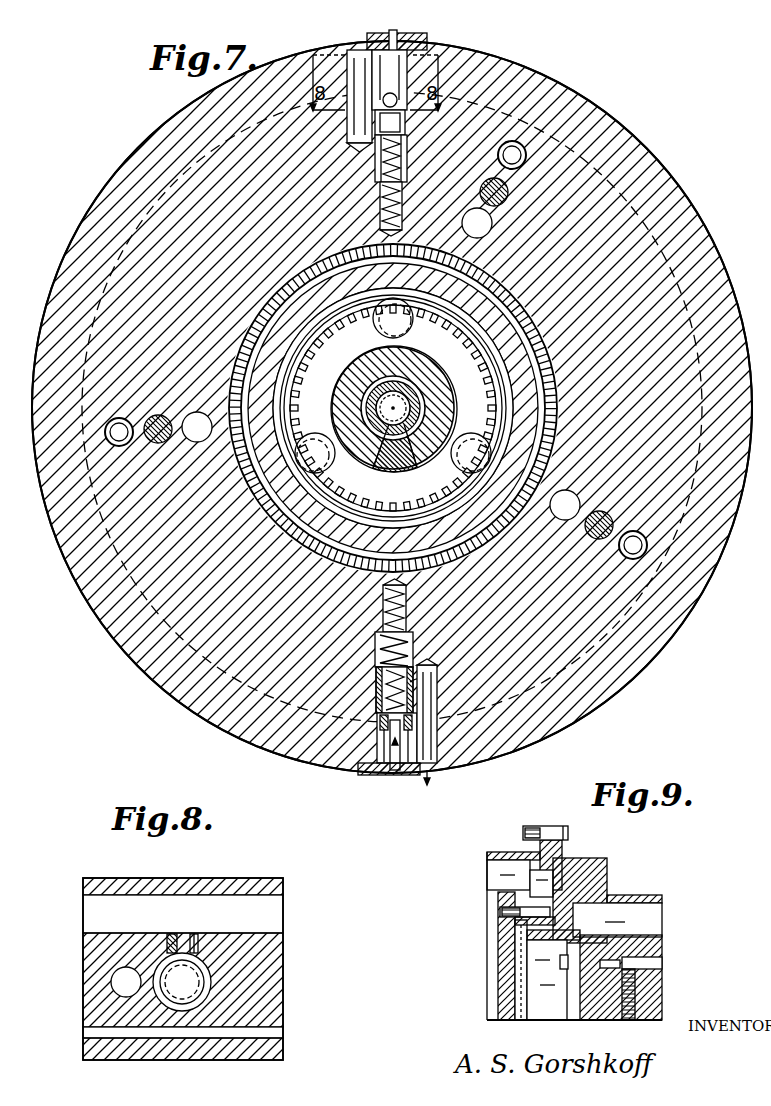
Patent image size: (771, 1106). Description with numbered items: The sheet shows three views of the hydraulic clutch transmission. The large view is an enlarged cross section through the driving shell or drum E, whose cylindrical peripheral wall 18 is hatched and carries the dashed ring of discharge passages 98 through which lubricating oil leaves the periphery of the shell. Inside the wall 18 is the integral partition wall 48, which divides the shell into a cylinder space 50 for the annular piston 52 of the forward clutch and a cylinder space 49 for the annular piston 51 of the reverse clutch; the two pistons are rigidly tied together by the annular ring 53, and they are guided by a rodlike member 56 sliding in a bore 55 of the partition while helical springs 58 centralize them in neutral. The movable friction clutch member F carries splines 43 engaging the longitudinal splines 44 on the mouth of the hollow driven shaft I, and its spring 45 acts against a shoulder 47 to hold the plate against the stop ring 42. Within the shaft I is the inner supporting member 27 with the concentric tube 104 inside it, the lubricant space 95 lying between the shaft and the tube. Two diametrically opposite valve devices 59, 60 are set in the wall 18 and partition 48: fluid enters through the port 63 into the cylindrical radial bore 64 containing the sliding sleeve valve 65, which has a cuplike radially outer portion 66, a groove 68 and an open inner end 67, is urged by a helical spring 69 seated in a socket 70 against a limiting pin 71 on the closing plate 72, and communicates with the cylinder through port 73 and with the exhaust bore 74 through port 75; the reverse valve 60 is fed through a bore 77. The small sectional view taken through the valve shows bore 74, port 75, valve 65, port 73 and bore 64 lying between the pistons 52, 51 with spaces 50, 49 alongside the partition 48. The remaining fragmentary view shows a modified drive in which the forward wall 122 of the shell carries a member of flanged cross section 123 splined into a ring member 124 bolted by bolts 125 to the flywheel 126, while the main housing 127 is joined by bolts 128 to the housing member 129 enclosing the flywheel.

In FIG. 7, the cylindrical peripheral wall 18 is at (505, 74).
In FIG. 7, the driving shell or drum E is at (144, 148).
In FIG. 7, the passages 98 is at (548, 98).
In FIG. 7, the partition wall 48 is at (594, 178).
In FIG. 8, the partition wall 48 is at (268, 983).
In FIG. 7, the helical springs 58 is at (500, 150).
In FIG. 7, the rodlike member 56 is at (489, 180).
In FIG. 7, the bore 55 is at (498, 205).
In FIG. 7, the movable friction clutch member F is at (288, 414).
In FIG. 7, the annular ring 53 is at (364, 268).
In FIG. 7, the stop ring 42 is at (348, 330).
In FIG. 7, the spring 45 is at (372, 322).
In FIG. 7, the splines 43 is at (452, 335).
In FIG. 7, the longitudinal splines 44 is at (412, 314).
In FIG. 7, the shoulders 47 is at (320, 440).
In FIG. 7, the driven shaft I is at (428, 378).
In FIG. 7, the inner supporting member 27 is at (404, 436).
In FIG. 7, the concentric tube 104 is at (388, 436).
In FIG. 7, the space 95 is at (420, 407).
In FIG. 7, the plate 72 is at (412, 34).
In FIG. 7, the limiting pin 71 is at (393, 33).
In FIG. 7, the exhaust bore 74 is at (350, 64).
In FIG. 8, the exhaust bore 74 is at (126, 966).
In FIG. 7, the cylindrical radial bore 64 is at (403, 70).
In FIG. 8, the cylindrical radial bore 64 is at (205, 962).
In FIG. 7, the port 63 is at (418, 64).
In FIG. 7, the valve device 59 is at (376, 55).
In FIG. 7, the port 73 is at (406, 117).
In FIG. 8, the port 73 is at (196, 953).
In FIG. 7, the cuplike radially outer portion 66 is at (407, 148).
In FIG. 7, the groove 68 is at (407, 168).
In FIG. 7, the sliding sleeve valve 65 is at (380, 158).
In FIG. 8, the sliding sleeve valve 65 is at (176, 953).
In FIG. 7, the port 75 is at (354, 140).
In FIG. 8, the port 75 is at (146, 968).
In FIG. 7, the helical spring 69 is at (402, 205).
In FIG. 7, the socket 70 is at (405, 186).
In FIG. 7, the inner end 67 is at (380, 190).
In FIG. 7, the valve device 60 is at (394, 776).
In FIG. 7, the bore 77 is at (360, 771).
In FIG. 8, the annular piston 52 is at (207, 880).
In FIG. 8, the cylinder space 50 is at (266, 913).
In FIG. 8, the cylinder space 49 is at (276, 1033).
In FIG. 8, the annular piston 51 is at (220, 1046).
In FIG. 9, the housing member 129 is at (514, 852).
In FIG. 9, the bolts 128 is at (548, 826).
In FIG. 9, the ring member 124 is at (555, 893).
In FIG. 9, the main housing 127 is at (645, 897).
In FIG. 9, the forward wall or head 122 is at (640, 962).
In FIG. 9, the flywheel 126 is at (502, 983).
In FIG. 9, the member of flanged cross section 123 is at (527, 942).
In FIG. 9, the bolts 125 is at (500, 912).